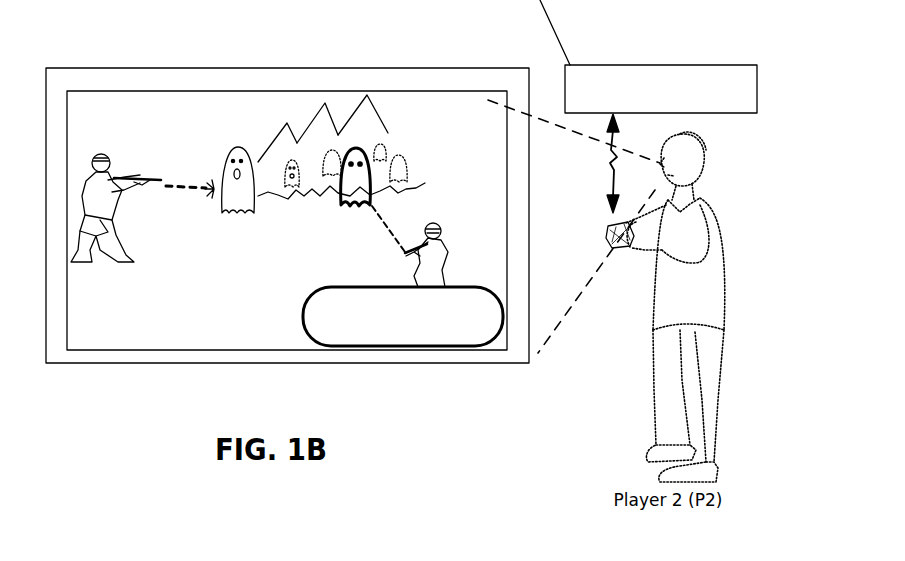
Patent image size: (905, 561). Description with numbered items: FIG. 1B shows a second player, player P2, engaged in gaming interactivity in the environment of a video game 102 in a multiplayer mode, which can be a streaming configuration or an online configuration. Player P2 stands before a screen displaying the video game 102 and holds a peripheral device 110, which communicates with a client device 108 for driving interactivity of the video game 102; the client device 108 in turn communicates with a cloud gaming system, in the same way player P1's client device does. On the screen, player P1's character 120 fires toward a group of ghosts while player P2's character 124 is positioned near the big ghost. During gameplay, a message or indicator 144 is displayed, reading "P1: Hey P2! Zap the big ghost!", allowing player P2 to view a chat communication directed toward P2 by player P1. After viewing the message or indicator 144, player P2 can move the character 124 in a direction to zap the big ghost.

The video game 102 is at (173, 112).
The client device 108 is at (664, 68).
The peripheral device 110 is at (607, 233).
The player 1 avatar 120 is at (112, 162).
The character 124 is at (448, 240).
The message or indicator 144 is at (303, 305).